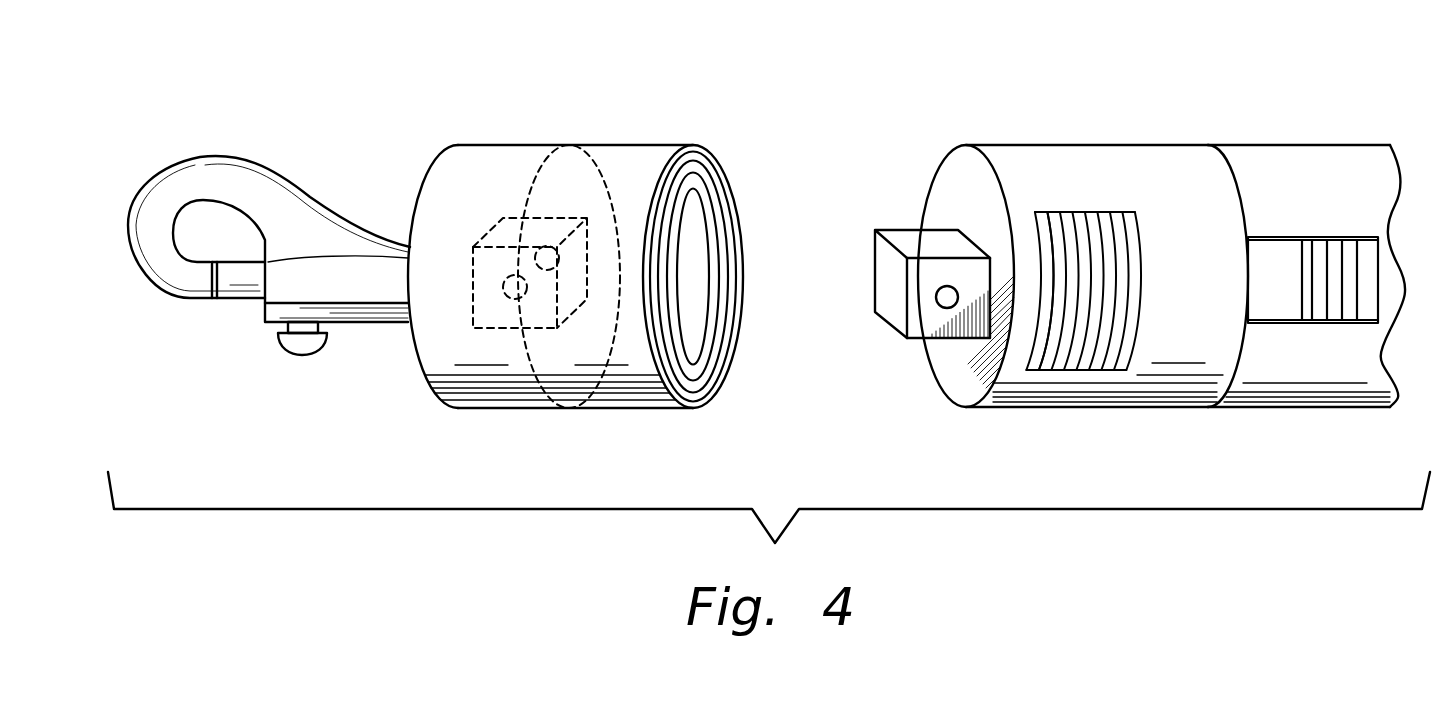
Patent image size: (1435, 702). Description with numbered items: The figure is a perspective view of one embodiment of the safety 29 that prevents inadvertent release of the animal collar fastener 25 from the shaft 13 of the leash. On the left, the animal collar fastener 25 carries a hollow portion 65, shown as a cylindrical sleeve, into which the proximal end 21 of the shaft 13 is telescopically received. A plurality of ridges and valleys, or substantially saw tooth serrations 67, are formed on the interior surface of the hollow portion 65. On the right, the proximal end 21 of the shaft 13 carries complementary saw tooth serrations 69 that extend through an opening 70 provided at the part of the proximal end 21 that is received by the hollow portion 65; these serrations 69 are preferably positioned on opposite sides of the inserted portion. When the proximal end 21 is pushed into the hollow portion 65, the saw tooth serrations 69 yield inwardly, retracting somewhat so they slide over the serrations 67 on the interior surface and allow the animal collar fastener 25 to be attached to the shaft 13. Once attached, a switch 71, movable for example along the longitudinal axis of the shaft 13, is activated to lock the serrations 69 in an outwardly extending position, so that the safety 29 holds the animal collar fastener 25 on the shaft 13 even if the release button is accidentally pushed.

The animal collar fastener 25 is at (420, 117).
The hollow portion 65 is at (610, 235).
The saw tooth serrations 67 is at (704, 220).
The proximal end 21 is at (1049, 252).
The opening 70 is at (1100, 212).
The saw tooth serrations 69 is at (1075, 343).
The shaft 13 is at (1288, 168).
The safety 29 is at (1349, 190).
The switch 71 is at (1326, 312).